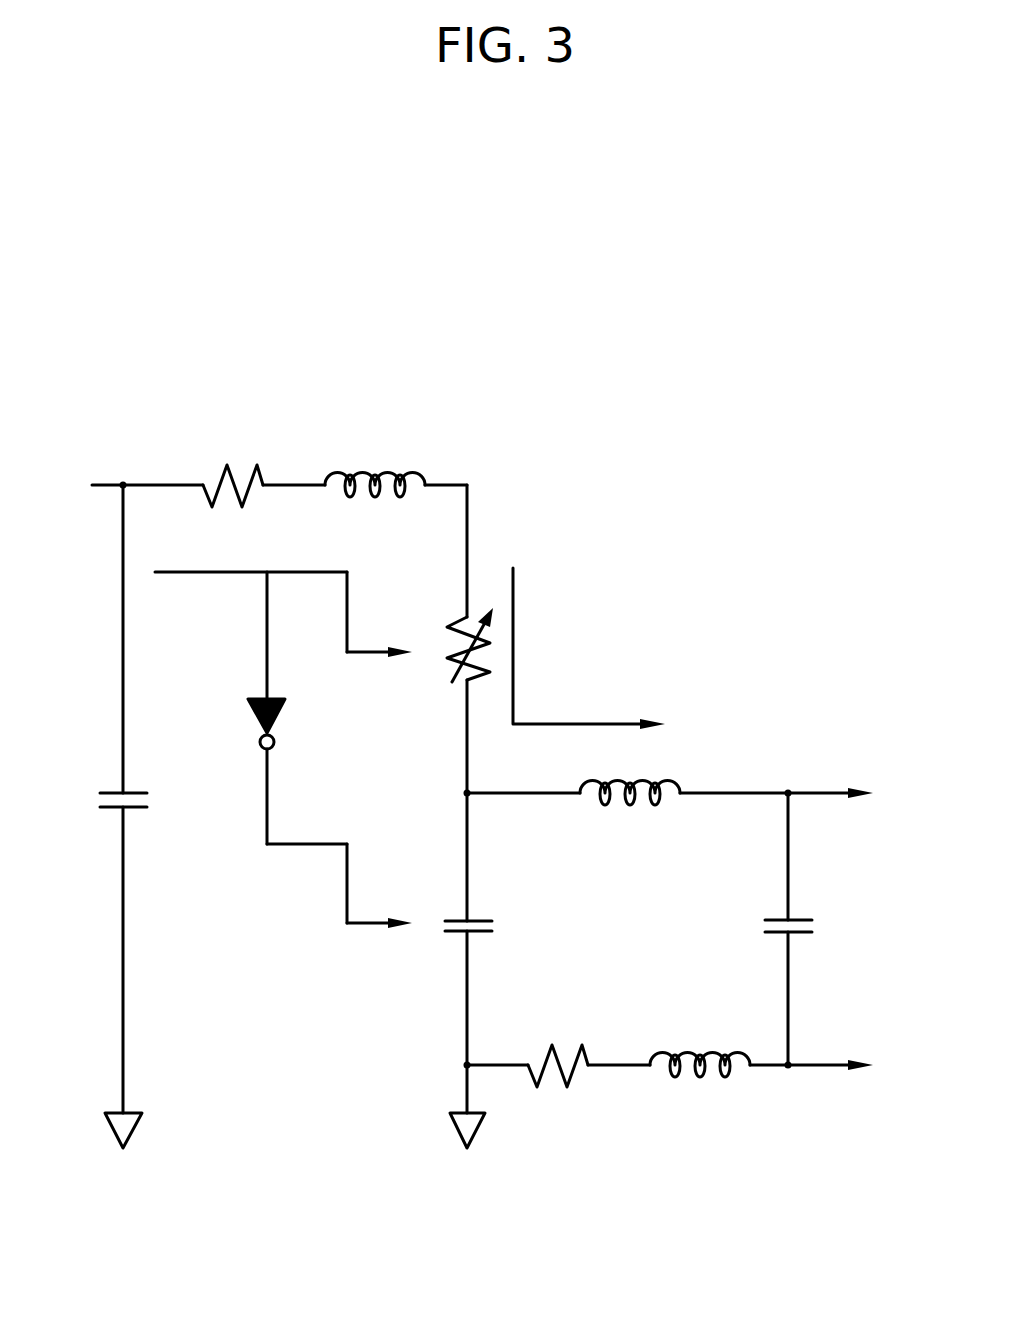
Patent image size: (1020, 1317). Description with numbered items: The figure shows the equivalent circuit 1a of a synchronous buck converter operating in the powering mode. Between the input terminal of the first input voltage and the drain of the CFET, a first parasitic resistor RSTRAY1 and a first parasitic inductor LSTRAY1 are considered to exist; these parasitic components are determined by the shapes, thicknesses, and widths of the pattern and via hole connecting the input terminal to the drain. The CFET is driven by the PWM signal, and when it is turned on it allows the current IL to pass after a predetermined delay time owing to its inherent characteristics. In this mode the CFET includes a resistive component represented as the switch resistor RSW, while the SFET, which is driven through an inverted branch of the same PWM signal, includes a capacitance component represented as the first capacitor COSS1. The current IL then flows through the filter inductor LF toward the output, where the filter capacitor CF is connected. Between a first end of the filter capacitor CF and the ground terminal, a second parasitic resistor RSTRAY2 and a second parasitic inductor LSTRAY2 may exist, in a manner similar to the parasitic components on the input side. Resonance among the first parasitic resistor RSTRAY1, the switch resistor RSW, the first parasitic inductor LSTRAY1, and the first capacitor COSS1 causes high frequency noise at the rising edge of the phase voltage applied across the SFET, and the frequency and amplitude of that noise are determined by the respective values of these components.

The equivalent circuit 1a is at (722, 546).
The first parasitic resistor RSTRAY1 is at (241, 467).
The first parasitic inductor LSTRAY1 is at (375, 462).
The PWM signal PWM is at (251, 556).
The switch resistor RSW is at (447, 666).
The element CFET is at (418, 646).
The first capacitor COSS1 is at (504, 923).
The element SFET is at (453, 945).
The current IL is at (591, 648).
The filter inductor LF is at (630, 815).
The filter capacitor CF is at (807, 927).
The second parasitic resistor RSTRAY2 is at (570, 1087).
The second parasitic inductor LSTRAY2 is at (700, 1092).